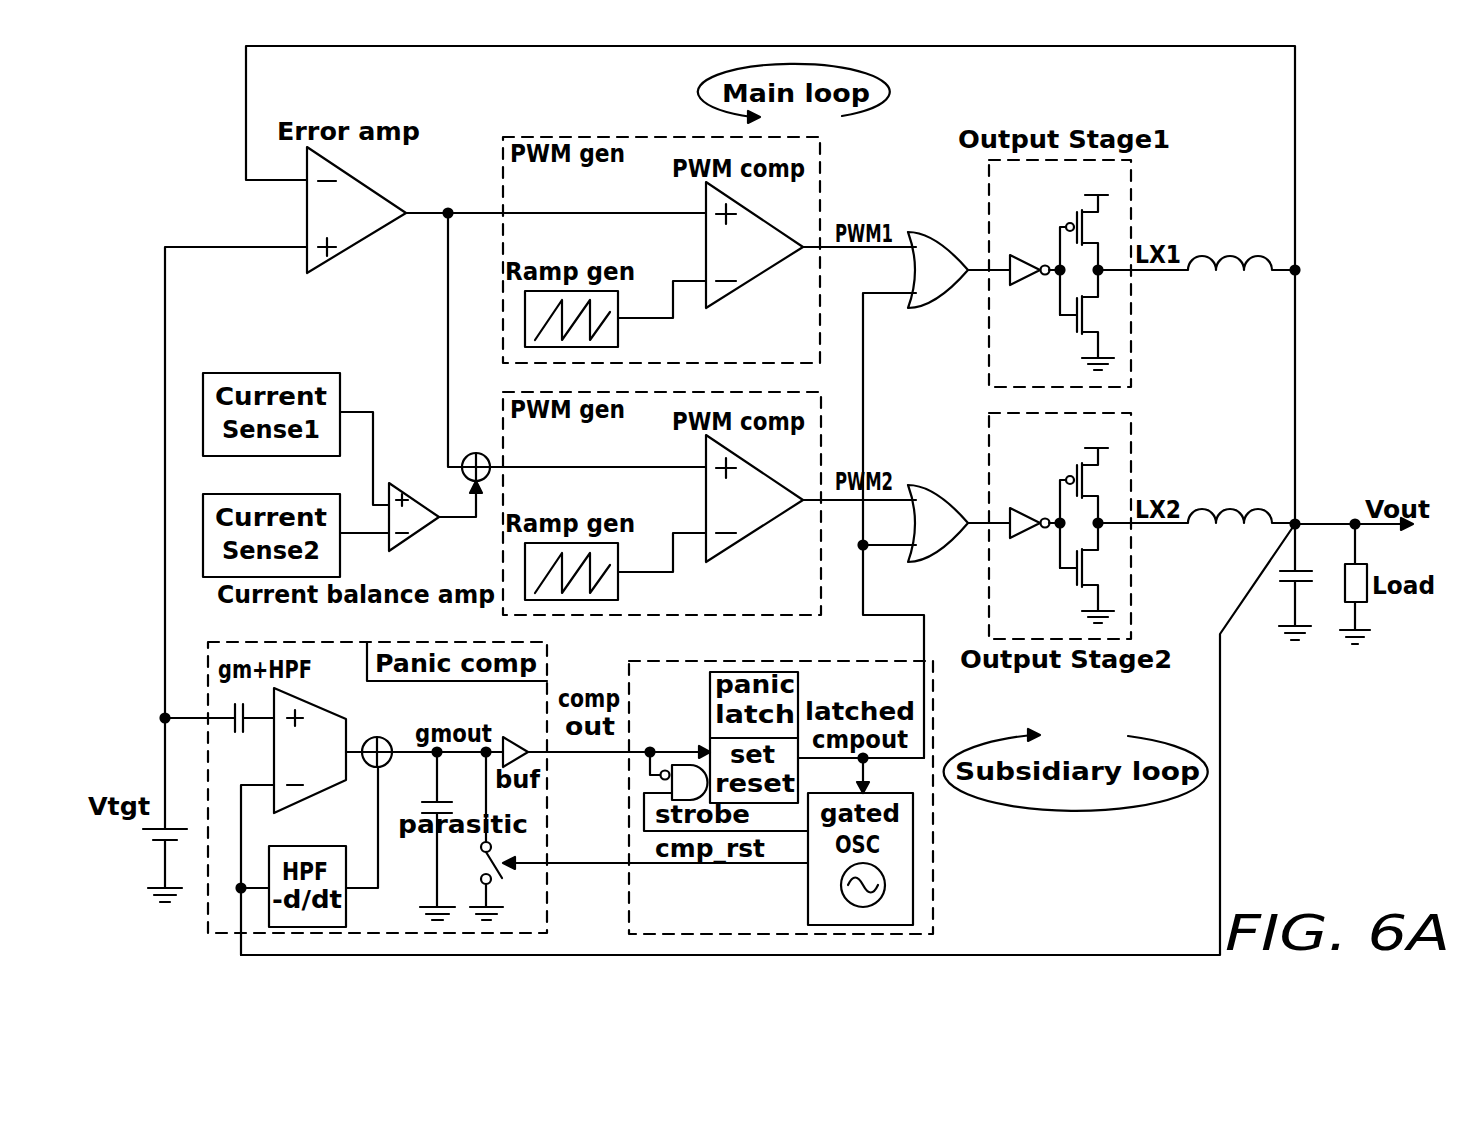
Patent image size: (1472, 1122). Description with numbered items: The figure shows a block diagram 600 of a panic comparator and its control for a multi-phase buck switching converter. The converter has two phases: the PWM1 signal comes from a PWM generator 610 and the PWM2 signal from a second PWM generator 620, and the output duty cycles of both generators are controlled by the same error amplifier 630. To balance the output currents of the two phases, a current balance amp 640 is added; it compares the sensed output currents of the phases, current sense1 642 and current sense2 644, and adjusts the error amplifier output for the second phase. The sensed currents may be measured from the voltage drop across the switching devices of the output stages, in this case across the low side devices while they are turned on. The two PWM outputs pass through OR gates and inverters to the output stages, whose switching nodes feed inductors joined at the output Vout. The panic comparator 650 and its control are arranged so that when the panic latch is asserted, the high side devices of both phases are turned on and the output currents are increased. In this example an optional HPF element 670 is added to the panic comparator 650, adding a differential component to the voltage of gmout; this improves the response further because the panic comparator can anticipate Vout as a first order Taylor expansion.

The block diagram 600 is at (175, 95).
The PWM generator 610 is at (590, 135).
The PWM generator 620 is at (695, 615).
The error amplifier 630 is at (307, 213).
The current balance amp 640 is at (292, 601).
The current sense1 642 is at (280, 373).
The current sense2 644 is at (280, 494).
The panic comparator 650 is at (486, 783).
The HPF element 670 is at (285, 846).